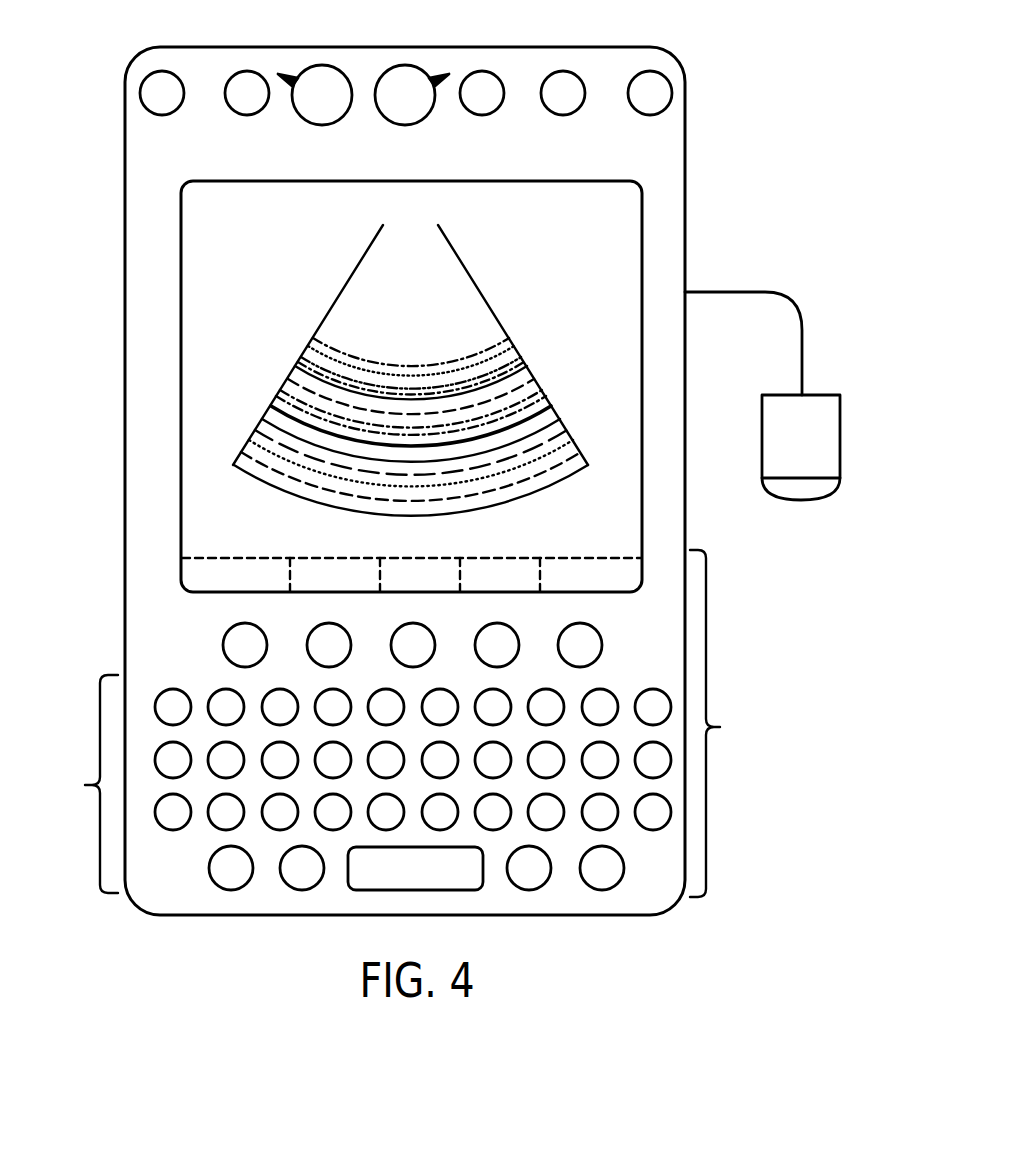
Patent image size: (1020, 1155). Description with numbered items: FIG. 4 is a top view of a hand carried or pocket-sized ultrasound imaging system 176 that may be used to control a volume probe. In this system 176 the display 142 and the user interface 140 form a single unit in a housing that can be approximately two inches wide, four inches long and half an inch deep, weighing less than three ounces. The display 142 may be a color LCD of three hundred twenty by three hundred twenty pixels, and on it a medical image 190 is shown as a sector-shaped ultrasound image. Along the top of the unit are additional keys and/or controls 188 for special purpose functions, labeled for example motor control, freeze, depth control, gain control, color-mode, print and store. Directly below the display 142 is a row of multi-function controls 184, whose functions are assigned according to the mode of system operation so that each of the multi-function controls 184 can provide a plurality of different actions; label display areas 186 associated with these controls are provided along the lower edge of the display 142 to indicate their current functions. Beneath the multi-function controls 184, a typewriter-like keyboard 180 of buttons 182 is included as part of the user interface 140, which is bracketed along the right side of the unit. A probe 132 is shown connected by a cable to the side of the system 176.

The hand carried or pocket-sized ultrasound imaging system 176 is at (136, 58).
The additional keys and/or controls 188 is at (230, 75).
The display 142 is at (643, 222).
The medical image 190 is at (313, 347).
The label display areas 186 is at (209, 558).
The multi-function controls 184 is at (315, 626).
The buttons 182 is at (200, 745).
The typewriter-like keyboard 180 is at (85, 785).
The user interface 140 is at (720, 727).
The ultrasound probe 132 is at (842, 437).